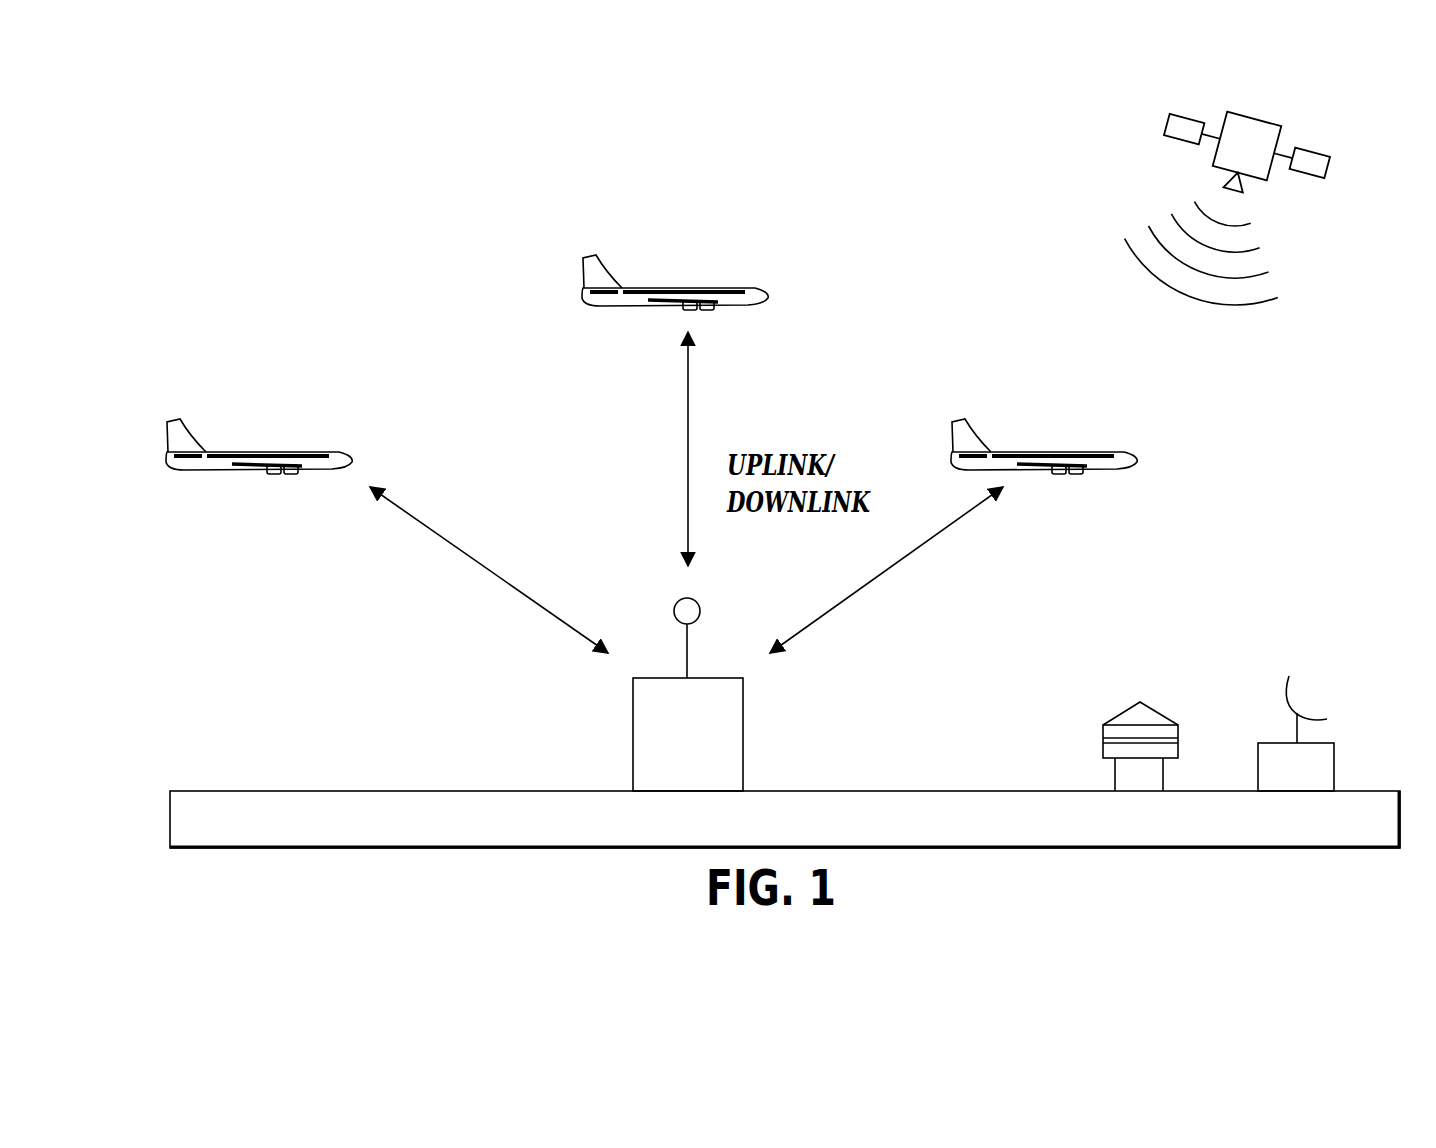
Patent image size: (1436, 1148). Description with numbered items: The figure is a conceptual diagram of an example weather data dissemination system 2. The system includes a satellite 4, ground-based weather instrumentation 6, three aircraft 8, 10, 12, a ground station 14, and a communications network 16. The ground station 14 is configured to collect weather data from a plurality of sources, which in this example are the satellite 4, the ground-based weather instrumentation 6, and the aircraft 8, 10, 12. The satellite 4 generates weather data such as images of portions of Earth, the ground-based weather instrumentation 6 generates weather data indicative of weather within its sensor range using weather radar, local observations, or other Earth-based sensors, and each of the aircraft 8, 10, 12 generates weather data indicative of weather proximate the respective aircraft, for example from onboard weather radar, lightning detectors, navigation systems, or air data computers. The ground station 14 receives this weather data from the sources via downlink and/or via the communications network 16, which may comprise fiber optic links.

The weather data dissemination system 2 is at (927, 154).
The satellite 4 is at (1267, 127).
The ground-based weather instrumentation 6 is at (1373, 663).
The aircraft 8 is at (322, 450).
The aircraft 10 is at (730, 286).
The aircraft 12 is at (1102, 450).
The ground station 14 is at (743, 730).
The communications network 16 is at (877, 791).